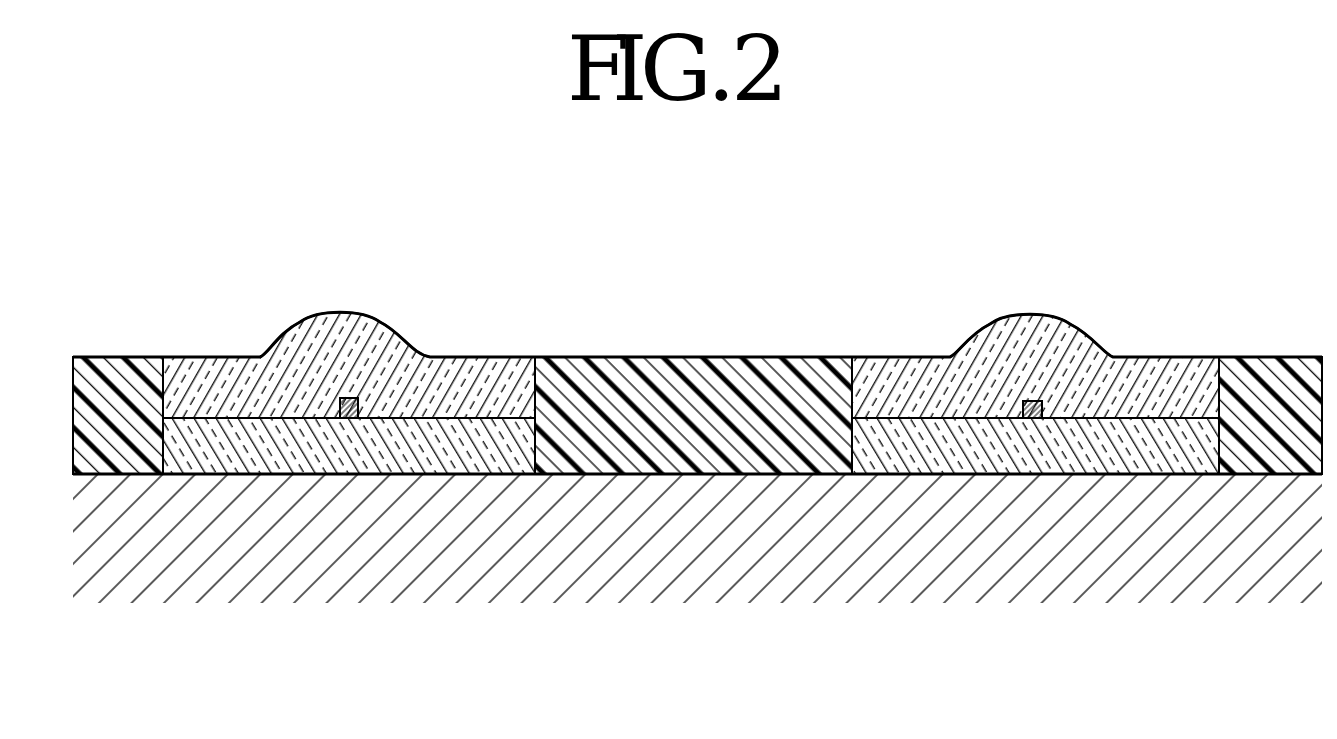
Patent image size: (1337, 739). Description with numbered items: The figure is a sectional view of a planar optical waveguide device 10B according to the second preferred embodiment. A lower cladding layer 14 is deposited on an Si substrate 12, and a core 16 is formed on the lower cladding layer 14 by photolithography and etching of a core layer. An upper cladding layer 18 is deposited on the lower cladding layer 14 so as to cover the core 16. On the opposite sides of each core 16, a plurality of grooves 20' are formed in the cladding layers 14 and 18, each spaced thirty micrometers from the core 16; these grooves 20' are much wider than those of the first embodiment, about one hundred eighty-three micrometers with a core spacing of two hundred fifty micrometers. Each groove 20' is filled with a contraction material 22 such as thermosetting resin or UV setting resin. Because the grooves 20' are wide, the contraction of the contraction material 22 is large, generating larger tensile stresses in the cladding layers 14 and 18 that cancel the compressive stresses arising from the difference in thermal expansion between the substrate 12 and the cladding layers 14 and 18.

The planar optical waveguide device 10B is at (768, 309).
The Si substrate 12 is at (665, 565).
The lower cladding layer 14 is at (222, 427).
The core 16 is at (341, 400).
The upper cladding layer 18 is at (358, 325).
The grooves 20' is at (680, 374).
The contraction material 22 is at (98, 356).